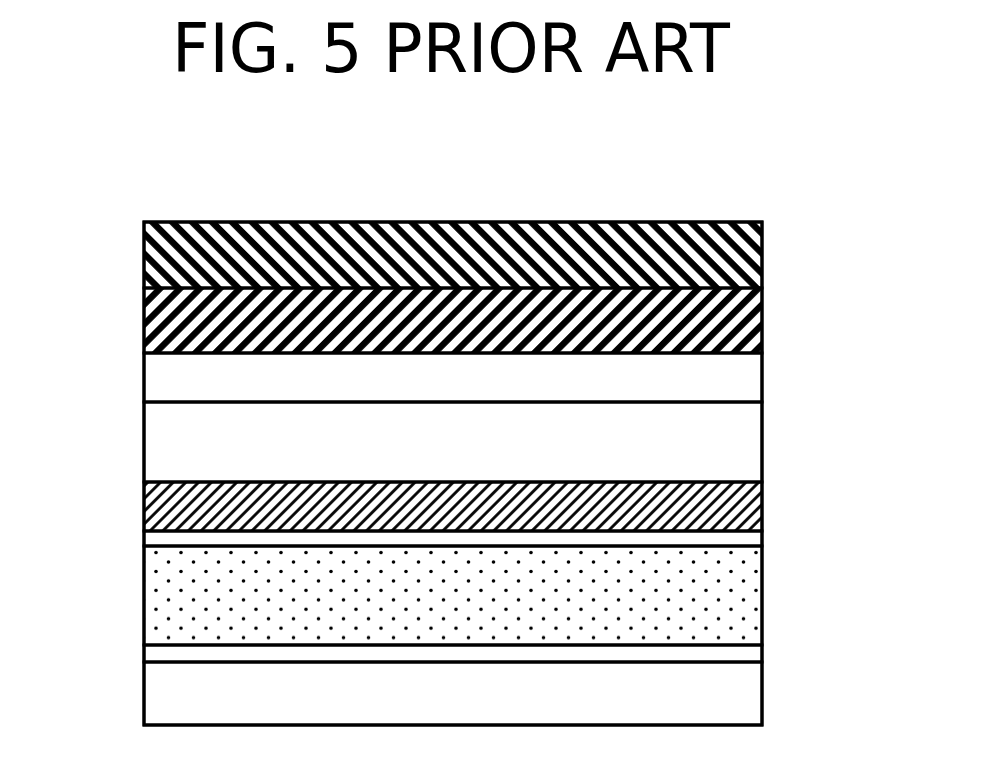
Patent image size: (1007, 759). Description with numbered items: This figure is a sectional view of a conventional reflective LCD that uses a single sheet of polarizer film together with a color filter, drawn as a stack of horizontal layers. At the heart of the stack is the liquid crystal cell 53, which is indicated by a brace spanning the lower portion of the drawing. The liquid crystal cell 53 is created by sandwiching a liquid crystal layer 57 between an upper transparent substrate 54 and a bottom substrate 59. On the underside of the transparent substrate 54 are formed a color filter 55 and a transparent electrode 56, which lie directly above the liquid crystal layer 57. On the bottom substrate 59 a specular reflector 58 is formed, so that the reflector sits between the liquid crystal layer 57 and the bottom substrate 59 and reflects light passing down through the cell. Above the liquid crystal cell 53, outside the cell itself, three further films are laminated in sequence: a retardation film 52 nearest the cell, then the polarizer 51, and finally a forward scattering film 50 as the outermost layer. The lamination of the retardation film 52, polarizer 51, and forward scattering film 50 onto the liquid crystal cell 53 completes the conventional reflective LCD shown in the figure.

The forward scattering film 50 is at (722, 263).
The polarizer 51 is at (722, 325).
The retardation film 52 is at (722, 385).
The liquid crystal cell 53 is at (128, 403).
The transparent substrate 54 is at (722, 435).
The color filter 55 is at (690, 500).
The transparent electrode 56 is at (730, 538).
The liquid crystal layer 57 is at (730, 595).
The specular reflector 58 is at (730, 653).
The bottom substrate 59 is at (730, 693).